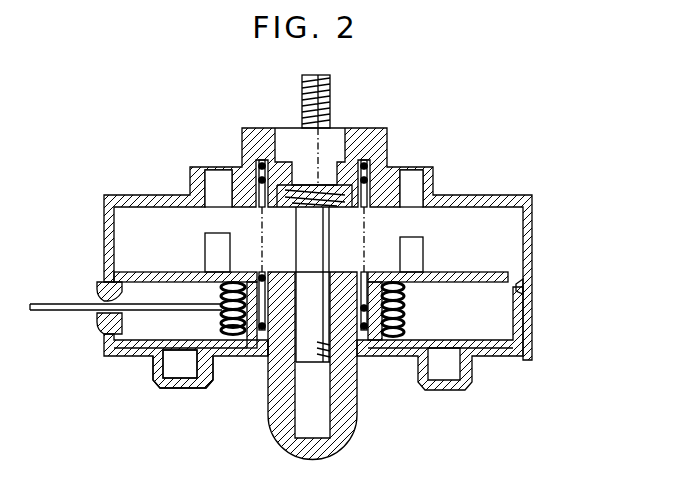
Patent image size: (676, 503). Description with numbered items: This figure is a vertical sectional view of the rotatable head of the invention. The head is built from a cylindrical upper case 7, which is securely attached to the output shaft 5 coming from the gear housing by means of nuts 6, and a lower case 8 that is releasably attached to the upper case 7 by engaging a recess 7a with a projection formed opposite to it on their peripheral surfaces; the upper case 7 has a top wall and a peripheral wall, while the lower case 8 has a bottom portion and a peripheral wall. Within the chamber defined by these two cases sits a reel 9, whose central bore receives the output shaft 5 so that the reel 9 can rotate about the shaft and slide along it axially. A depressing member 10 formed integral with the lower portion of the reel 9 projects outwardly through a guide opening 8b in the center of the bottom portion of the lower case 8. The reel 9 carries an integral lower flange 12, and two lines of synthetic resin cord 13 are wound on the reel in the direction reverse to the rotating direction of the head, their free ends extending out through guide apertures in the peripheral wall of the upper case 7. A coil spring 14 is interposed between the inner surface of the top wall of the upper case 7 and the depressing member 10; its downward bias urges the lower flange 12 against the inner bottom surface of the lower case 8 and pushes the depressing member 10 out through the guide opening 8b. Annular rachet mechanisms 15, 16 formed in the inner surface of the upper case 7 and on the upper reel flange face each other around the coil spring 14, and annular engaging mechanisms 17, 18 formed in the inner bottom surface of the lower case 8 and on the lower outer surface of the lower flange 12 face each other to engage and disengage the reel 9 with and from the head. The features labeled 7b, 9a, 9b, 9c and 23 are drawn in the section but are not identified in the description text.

The output shaft 5 is at (331, 93).
The nuts 6 is at (367, 172).
The upper case 7 is at (482, 200).
The recess 7a is at (532, 290).
The clamping jaw 7b is at (95, 297).
The lower case 8 is at (517, 358).
The guide opening 8b is at (263, 365).
The reel 9 is at (148, 260).
The contact plate leg 9a is at (366, 296).
The contact plate arm 9b is at (477, 277).
The contact plate foot 9c is at (475, 348).
The depressing member 10 is at (337, 435).
The lower flange 12 is at (130, 348).
The cord 13 is at (60, 308).
The coil spring 14 is at (258, 168).
The annular rachet mechanism 15 is at (218, 183).
The annular rachet mechanism 16 is at (213, 250).
The annular engaging mechanism 17 is at (157, 380).
The annular engaging mechanism 18 is at (180, 372).
The screw tip bore 23 is at (303, 350).